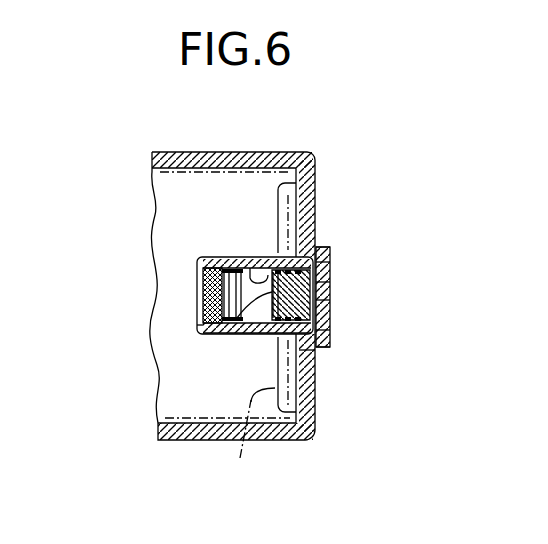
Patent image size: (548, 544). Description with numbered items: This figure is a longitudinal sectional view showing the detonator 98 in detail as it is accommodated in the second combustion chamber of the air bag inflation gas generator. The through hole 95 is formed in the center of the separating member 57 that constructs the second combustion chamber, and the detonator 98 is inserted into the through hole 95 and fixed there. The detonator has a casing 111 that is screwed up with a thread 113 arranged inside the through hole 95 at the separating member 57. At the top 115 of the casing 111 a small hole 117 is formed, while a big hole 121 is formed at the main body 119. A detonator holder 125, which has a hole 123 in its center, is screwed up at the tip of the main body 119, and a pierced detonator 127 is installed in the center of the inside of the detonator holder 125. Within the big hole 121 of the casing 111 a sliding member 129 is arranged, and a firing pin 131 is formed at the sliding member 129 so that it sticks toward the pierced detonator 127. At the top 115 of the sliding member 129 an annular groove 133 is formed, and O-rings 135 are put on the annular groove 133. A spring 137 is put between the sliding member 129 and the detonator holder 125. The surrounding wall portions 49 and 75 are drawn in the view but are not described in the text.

The shaft 49 is at (248, 423).
The separating member 57 is at (305, 212).
The housing 75 is at (316, 175).
The through hole 95 is at (306, 352).
The detonator 98 is at (332, 248).
The casing 111 is at (253, 339).
The thread 113 is at (319, 250).
The top 115 is at (331, 287).
The small hole 117 is at (330, 298).
The main body 119 is at (228, 256).
The big hole 121 is at (257, 257).
The hole 123 is at (200, 292).
The detonator holder 125 is at (199, 255).
The pierced detonator 127 is at (197, 330).
The sliding member 129 is at (318, 331).
The firing pin 131 is at (237, 318).
The annular groove 133 is at (313, 344).
The O-rings 135 is at (330, 273).
The spring 137 is at (233, 333).